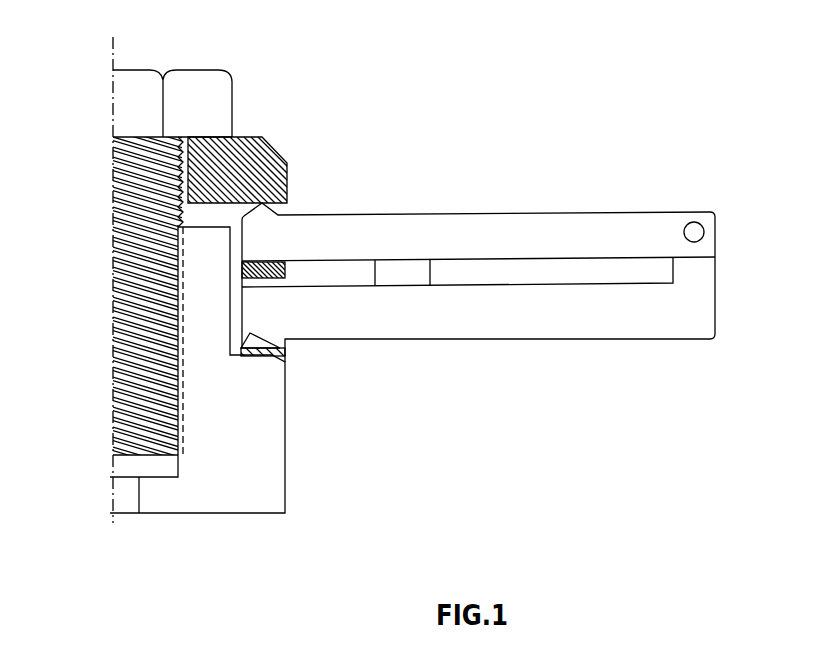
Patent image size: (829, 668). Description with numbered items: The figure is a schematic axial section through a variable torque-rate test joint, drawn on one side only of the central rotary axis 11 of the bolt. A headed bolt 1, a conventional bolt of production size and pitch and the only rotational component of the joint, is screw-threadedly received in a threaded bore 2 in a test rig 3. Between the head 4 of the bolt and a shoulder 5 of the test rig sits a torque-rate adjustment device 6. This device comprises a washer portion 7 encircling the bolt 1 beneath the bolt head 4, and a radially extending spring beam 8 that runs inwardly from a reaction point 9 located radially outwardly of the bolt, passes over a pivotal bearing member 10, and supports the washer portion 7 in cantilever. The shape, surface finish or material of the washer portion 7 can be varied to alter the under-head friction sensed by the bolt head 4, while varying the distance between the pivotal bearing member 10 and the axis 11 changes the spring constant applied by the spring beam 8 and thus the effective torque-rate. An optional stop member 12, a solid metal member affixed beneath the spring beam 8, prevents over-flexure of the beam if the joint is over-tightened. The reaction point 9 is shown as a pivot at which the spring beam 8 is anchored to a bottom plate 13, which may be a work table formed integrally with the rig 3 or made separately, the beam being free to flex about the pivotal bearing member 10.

The headed bolt 1 is at (118, 375).
The threaded bore 2 is at (183, 423).
The test rig 3 is at (243, 493).
The head 4 is at (213, 90).
The shoulder 5 is at (278, 356).
The torque-rate adjustment device 6 is at (374, 164).
The washer portion 7 is at (265, 158).
The spring beam 8 is at (533, 220).
The reaction point 9 is at (698, 224).
The pivotal bearing member 10 is at (408, 267).
The central rotary axis 11 is at (115, 40).
The stop member 12 is at (282, 277).
The bottom plate 13 is at (513, 319).